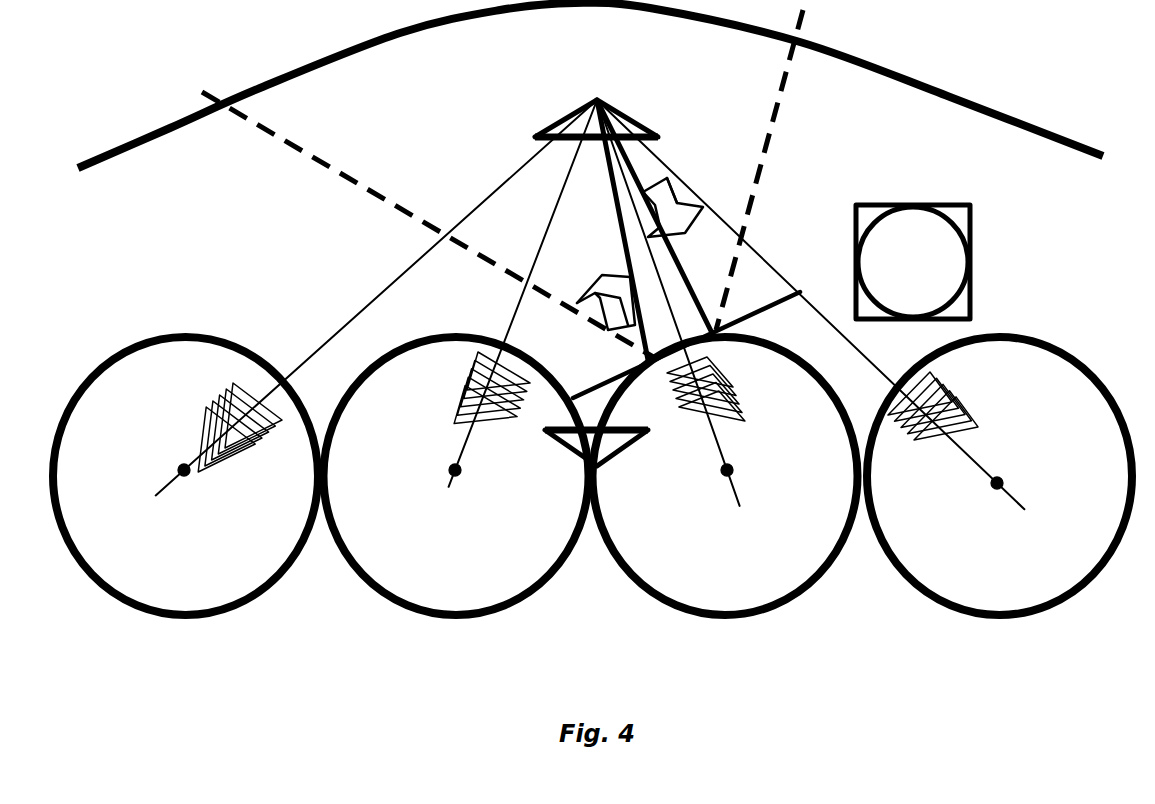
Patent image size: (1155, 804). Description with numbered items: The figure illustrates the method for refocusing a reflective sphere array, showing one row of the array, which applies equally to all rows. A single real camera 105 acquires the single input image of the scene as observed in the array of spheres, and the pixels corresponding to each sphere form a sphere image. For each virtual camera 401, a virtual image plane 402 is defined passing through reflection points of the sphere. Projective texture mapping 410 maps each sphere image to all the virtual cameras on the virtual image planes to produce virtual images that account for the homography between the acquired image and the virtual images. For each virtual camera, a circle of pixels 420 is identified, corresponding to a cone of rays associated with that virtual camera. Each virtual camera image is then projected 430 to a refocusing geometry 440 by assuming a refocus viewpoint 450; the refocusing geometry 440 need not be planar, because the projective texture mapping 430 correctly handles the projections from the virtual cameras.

The real camera 105 is at (606, 104).
The virtual camera 401 is at (462, 384).
The virtual image plane 402 is at (773, 310).
The projective texture mapping 410 is at (677, 203).
The circle of pixels 420 is at (958, 225).
The projection 430 is at (628, 304).
The refocusing geometry 440 is at (880, 67).
The refocus viewpoint 450 is at (565, 445).